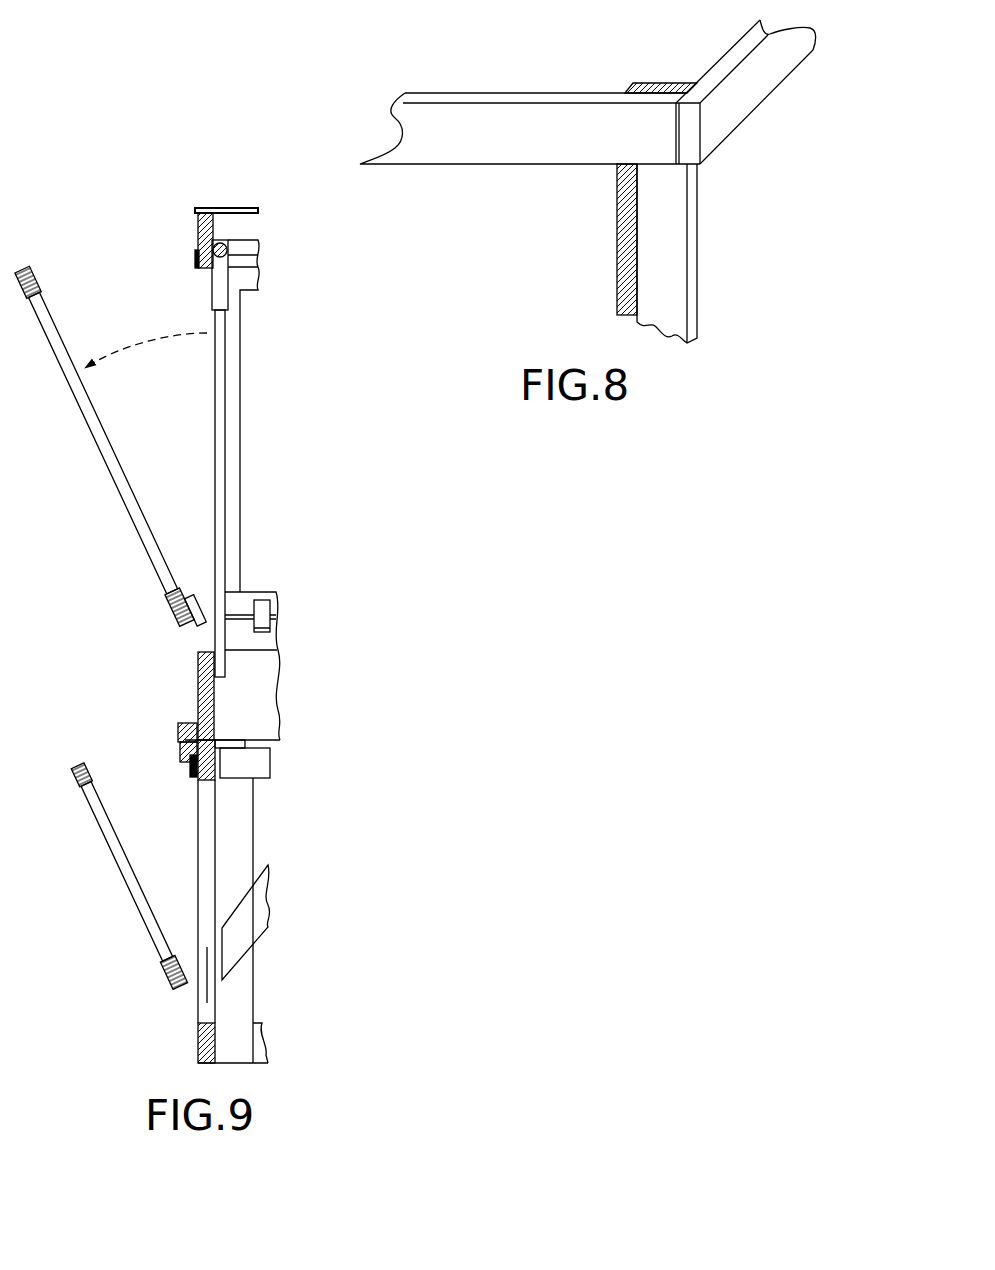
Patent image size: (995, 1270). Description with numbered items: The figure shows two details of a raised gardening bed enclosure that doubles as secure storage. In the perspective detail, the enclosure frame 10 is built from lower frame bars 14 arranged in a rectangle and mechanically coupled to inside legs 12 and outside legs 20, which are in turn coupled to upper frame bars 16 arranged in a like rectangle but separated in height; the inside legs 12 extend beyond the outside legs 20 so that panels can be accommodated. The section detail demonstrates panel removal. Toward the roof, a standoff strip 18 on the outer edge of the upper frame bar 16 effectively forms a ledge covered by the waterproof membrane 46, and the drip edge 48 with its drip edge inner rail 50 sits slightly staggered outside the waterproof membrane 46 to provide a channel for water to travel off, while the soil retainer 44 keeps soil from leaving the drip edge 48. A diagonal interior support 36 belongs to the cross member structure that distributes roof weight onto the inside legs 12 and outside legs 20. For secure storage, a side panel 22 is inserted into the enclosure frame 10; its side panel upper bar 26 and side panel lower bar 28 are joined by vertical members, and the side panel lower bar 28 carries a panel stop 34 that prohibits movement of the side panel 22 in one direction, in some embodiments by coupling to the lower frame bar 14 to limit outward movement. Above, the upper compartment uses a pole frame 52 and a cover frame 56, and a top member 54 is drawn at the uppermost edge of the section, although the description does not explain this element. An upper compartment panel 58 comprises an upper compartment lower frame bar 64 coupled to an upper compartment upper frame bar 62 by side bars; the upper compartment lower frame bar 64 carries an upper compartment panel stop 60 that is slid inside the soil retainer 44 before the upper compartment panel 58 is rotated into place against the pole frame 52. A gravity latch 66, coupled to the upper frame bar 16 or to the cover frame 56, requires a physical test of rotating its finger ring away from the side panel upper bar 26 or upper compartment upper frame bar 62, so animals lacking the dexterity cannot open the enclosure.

In FIG. 8, the enclosure frame 10 is at (598, 278).
In FIG. 9, the enclosure frame 10 is at (229, 753).
In FIG. 8, the inside leg 12 is at (660, 82).
In FIG. 9, the lower frame bar 14 is at (209, 1023).
In FIG. 8, the upper frame bar 16 is at (558, 118).
In FIG. 9, the upper frame bar 16 is at (212, 780).
In FIG. 9, the standoff strip 18 is at (191, 770).
In FIG. 8, the outside leg 20 is at (668, 260).
In FIG. 9, the side panel 22 is at (116, 893).
In FIG. 9, the side panel upper bar 26 is at (88, 782).
In FIG. 9, the side panel lower bar 28 is at (170, 982).
In FIG. 9, the panel stop 34 is at (175, 973).
In FIG. 9, the diagonal interior support 36 is at (242, 930).
In FIG. 9, the soil retainer 44 is at (196, 698).
In FIG. 9, the waterproof membrane 46 is at (178, 757).
In FIG. 9, the drip edge 48 is at (178, 724).
In FIG. 9, the drip edge inner rail 50 is at (210, 707).
In FIG. 9, the pole frame 52 is at (228, 442).
In FIG. 9, the top plate 54 is at (227, 205).
In FIG. 9, the cover frame 56 is at (200, 226).
In FIG. 9, the upper compartment panel 58 is at (90, 437).
In FIG. 9, the upper compartment panel stop 60 is at (198, 632).
In FIG. 9, the upper compartment upper frame bar 62 is at (37, 280).
In FIG. 9, the upper compartment lower frame bar 64 is at (170, 606).
In FIG. 9, the gravity latch 66 is at (185, 265).